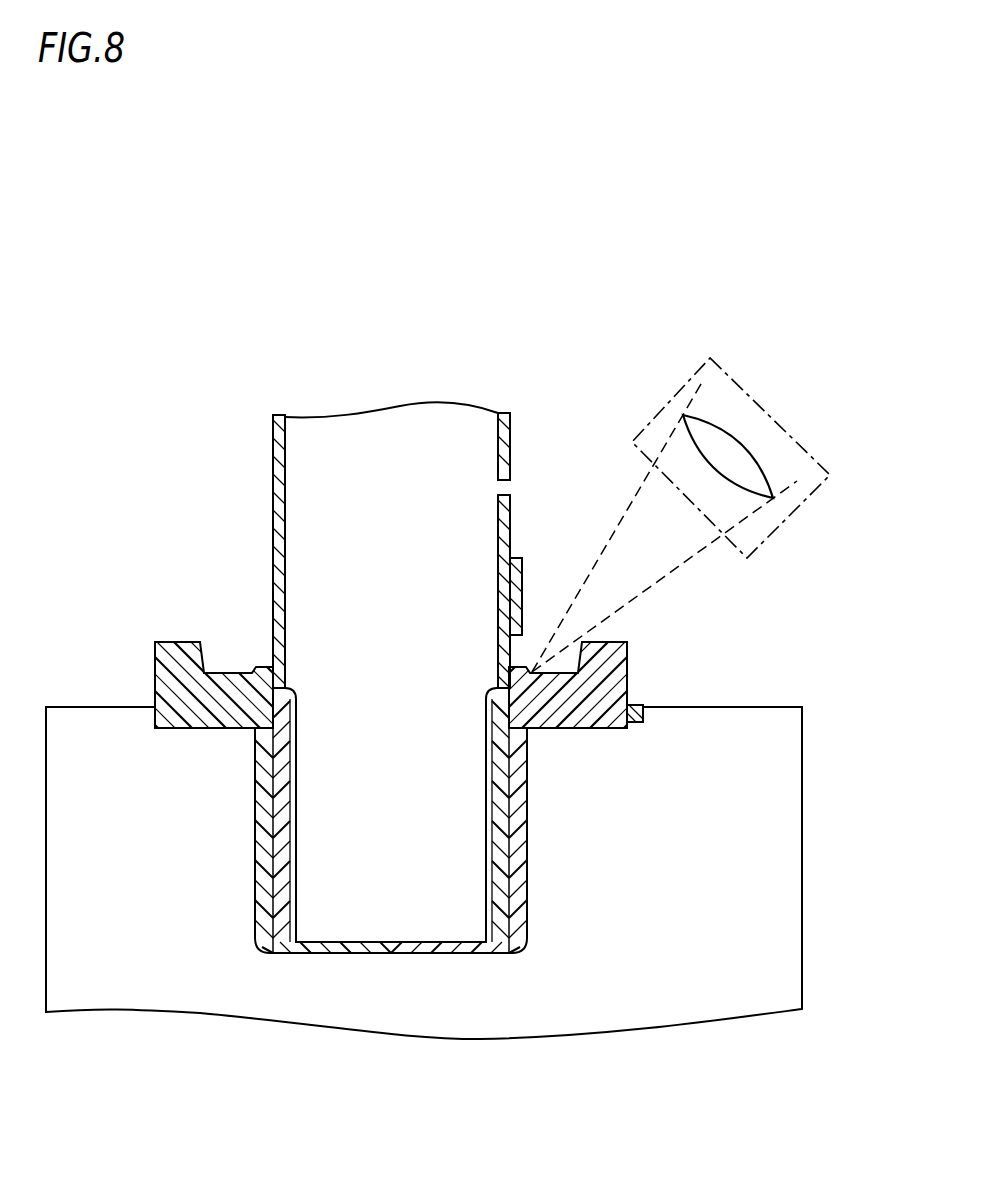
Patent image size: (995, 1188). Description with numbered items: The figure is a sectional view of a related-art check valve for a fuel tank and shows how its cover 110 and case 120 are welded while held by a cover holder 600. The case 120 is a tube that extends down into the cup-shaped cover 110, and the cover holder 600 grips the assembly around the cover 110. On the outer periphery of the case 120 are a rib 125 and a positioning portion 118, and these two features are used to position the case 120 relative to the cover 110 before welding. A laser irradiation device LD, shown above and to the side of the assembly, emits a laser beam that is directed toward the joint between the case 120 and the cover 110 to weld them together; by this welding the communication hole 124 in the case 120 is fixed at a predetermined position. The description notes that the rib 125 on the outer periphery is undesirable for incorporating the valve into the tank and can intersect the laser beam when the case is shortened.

The cover holder 600 is at (110, 777).
The positioning portion 118 is at (644, 717).
The cover 110 is at (525, 775).
The case 120 is at (498, 562).
The communication hole 124 is at (507, 489).
The rib 125 is at (513, 590).
The laser irradiation device LD is at (787, 518).